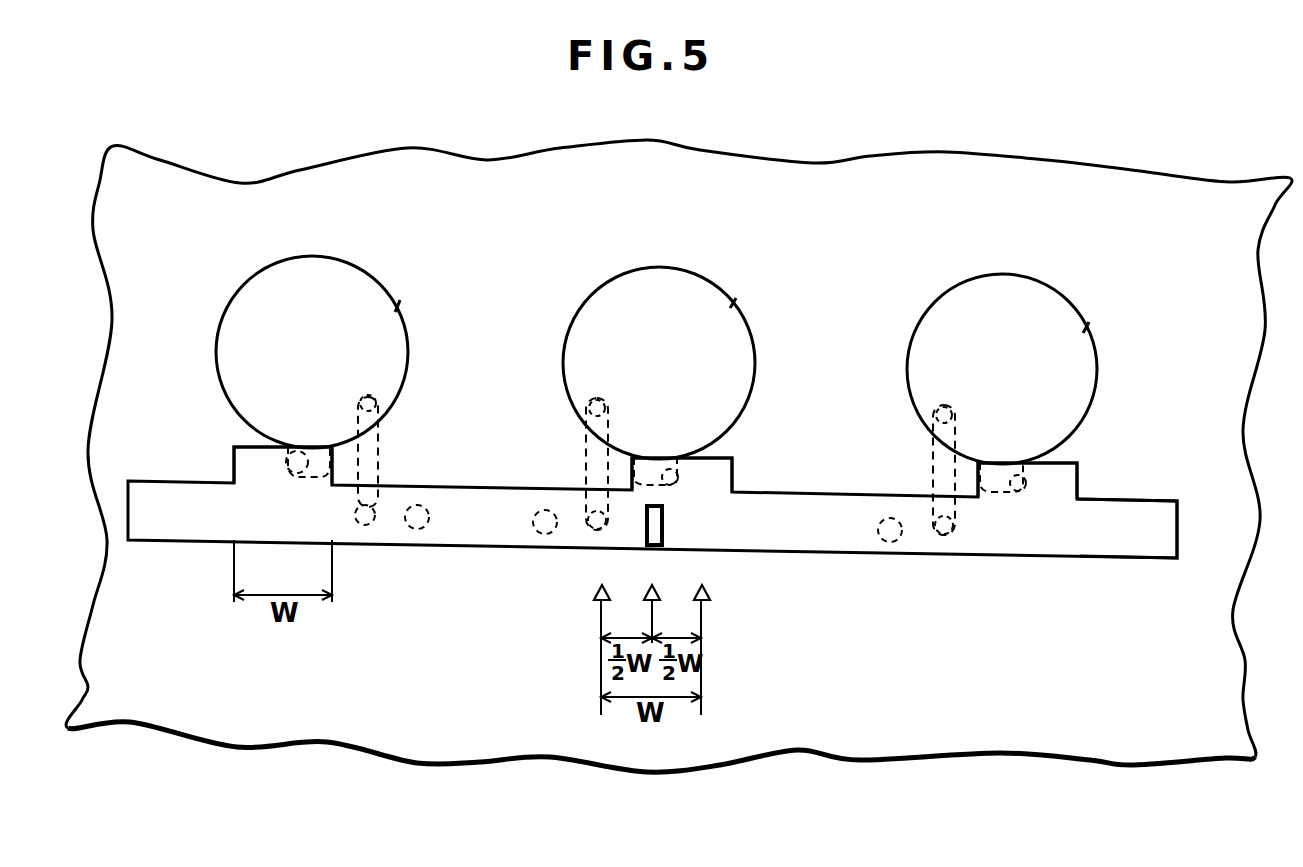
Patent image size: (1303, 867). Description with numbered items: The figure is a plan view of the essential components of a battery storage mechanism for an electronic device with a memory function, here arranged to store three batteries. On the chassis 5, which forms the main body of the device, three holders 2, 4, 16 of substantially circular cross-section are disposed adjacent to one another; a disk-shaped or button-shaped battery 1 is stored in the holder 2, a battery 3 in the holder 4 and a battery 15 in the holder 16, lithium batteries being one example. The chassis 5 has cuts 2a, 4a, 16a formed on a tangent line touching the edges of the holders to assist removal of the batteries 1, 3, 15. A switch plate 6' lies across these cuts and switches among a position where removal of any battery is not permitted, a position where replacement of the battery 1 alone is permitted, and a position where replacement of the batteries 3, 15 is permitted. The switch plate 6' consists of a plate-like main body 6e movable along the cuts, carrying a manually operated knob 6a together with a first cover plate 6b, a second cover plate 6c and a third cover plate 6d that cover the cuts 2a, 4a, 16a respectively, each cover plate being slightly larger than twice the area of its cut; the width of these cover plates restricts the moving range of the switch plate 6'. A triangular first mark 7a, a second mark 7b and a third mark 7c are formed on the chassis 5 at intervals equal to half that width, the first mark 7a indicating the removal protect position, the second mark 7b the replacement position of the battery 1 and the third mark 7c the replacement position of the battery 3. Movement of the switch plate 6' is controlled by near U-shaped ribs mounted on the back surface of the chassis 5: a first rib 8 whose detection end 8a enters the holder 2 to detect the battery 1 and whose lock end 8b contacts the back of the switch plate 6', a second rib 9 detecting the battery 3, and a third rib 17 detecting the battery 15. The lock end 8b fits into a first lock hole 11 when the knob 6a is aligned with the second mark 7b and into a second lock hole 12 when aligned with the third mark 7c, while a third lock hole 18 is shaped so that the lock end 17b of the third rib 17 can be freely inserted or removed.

The chassis 5 is at (930, 177).
The switch plate 6' is at (652, 525).
The knob 6a is at (665, 523).
The first cover plate 6b is at (245, 460).
The second cover plate 6c is at (725, 470).
The third cover plate 6d is at (1073, 475).
The main body 6e is at (1163, 527).
The battery 1 is at (342, 282).
The holder 2 is at (392, 312).
The cut 2a is at (297, 476).
The battery 3 is at (682, 288).
The holder 4 is at (725, 302).
The cut 4a is at (677, 485).
The battery 15 is at (1045, 298).
The holder 16 is at (1083, 330).
The cut 16a is at (1023, 492).
The first rib 8 is at (380, 450).
The detection end 8a is at (382, 397).
The lock end 8b is at (360, 525).
The second rib 9 is at (595, 459).
The third rib 17 is at (933, 448).
The lock end 17b is at (953, 530).
The first lock hole 11 is at (418, 530).
The second lock hole 12 is at (545, 534).
The third lock hole 18 is at (890, 542).
The first mark 7a is at (657, 597).
The second mark 7b is at (595, 594).
The third mark 7c is at (710, 595).